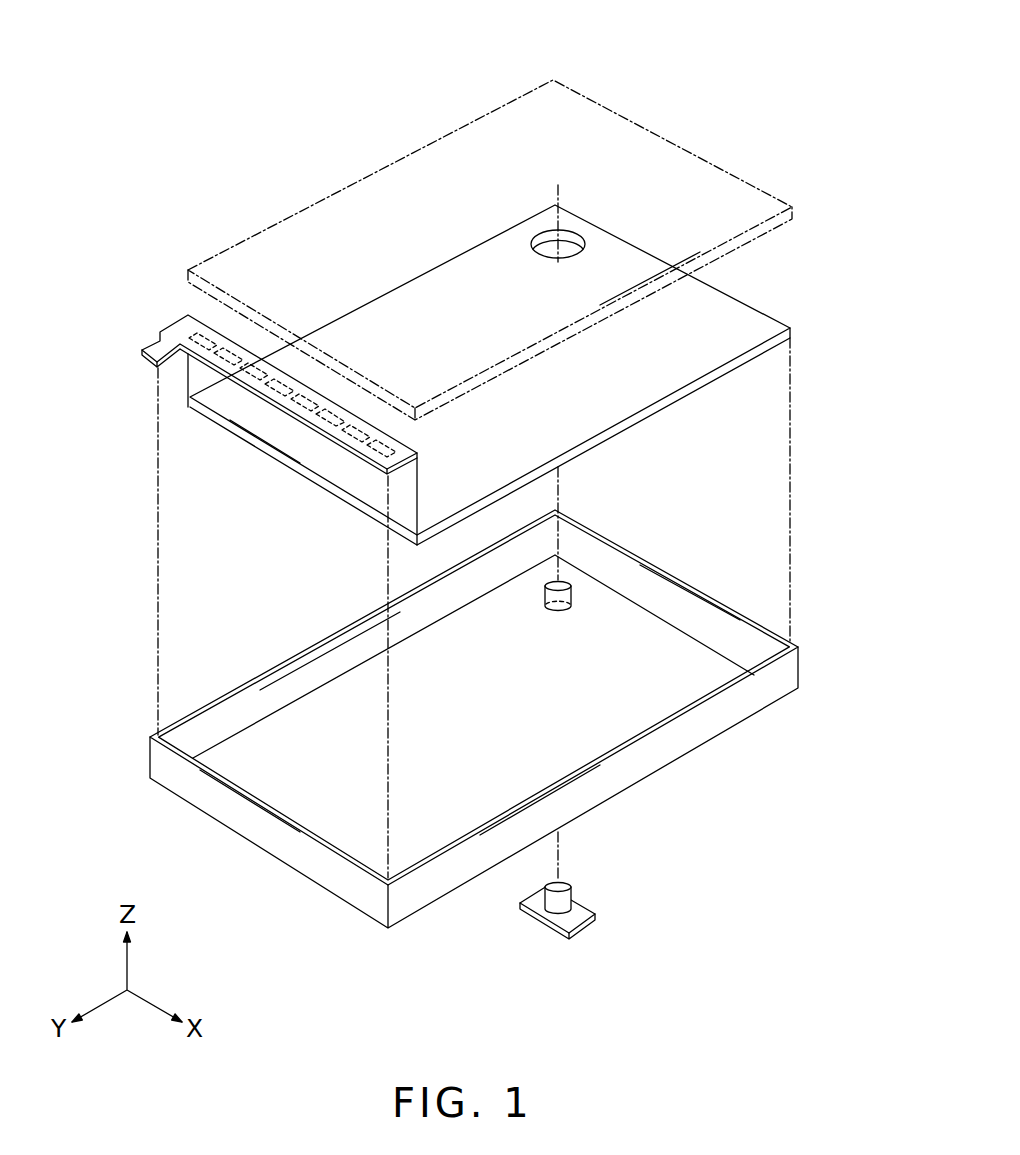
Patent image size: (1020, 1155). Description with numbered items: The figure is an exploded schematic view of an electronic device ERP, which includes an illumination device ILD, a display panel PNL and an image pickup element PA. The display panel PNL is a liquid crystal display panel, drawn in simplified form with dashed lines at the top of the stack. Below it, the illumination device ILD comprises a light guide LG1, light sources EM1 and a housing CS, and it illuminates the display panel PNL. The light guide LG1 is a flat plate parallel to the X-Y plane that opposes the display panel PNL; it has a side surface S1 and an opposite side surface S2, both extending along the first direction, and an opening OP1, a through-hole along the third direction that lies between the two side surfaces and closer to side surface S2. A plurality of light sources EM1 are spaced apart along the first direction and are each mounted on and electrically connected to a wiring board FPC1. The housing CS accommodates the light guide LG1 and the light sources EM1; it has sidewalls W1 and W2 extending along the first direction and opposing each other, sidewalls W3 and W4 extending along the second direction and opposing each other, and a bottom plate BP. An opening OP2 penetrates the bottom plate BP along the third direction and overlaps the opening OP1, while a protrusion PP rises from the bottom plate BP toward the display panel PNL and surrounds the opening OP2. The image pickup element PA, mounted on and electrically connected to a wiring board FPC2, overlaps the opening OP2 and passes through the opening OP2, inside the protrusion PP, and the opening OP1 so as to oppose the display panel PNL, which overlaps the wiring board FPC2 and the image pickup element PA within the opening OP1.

The electronic device ERP is at (452, 70).
The display panel PNL is at (627, 115).
The illumination device ILD is at (338, 937).
The light guide LG1 is at (730, 292).
The side surface S1 is at (277, 466).
The side surface S2 is at (768, 308).
The opening OP1 is at (567, 247).
The wiring board FPC1 is at (166, 329).
The light source EM1 is at (192, 370).
The housing CS is at (150, 740).
The bottom plate BP is at (257, 742).
The sidewall W1 is at (292, 823).
The sidewall W2 is at (748, 617).
The sidewall W3 is at (325, 636).
The sidewall W4 is at (588, 767).
The protrusion PP is at (573, 593).
The opening OP2 is at (553, 613).
The wiring board FPC2 is at (588, 928).
The image pickup element PA is at (557, 903).